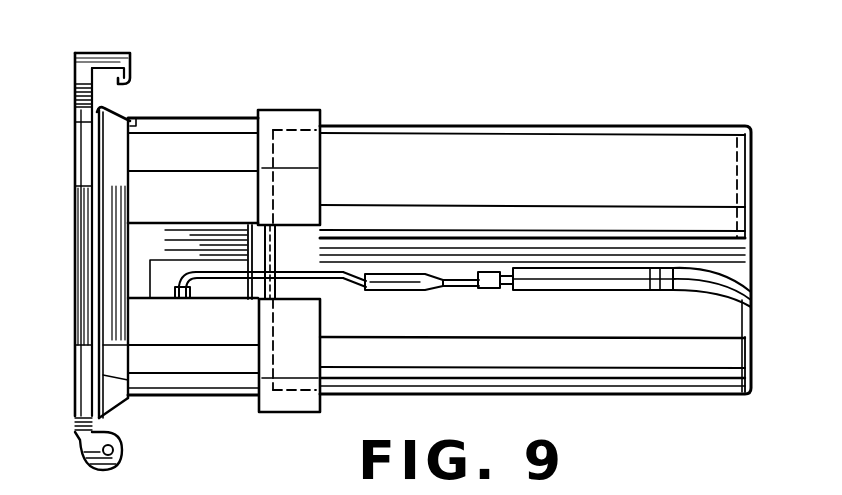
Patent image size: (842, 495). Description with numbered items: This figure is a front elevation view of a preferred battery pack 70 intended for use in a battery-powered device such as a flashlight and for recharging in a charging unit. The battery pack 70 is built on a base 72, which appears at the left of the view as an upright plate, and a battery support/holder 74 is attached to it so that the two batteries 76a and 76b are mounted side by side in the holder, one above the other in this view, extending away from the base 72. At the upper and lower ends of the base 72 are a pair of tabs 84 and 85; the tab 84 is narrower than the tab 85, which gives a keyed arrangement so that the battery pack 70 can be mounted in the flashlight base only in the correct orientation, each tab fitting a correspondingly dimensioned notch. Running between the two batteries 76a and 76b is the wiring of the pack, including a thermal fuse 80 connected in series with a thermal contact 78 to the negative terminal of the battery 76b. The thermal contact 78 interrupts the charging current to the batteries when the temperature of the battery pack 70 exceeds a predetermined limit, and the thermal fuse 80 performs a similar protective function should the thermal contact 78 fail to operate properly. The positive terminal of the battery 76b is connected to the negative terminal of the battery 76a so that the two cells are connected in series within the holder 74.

The battery pack 70 is at (510, 118).
The base 72 is at (88, 374).
The battery support/holder 74 is at (291, 117).
The battery 76a is at (568, 168).
The battery 76b is at (549, 335).
The thermal contact 78 is at (615, 280).
The thermal fuse 80 is at (397, 290).
The tab 84 is at (123, 452).
The tab 85 is at (131, 55).